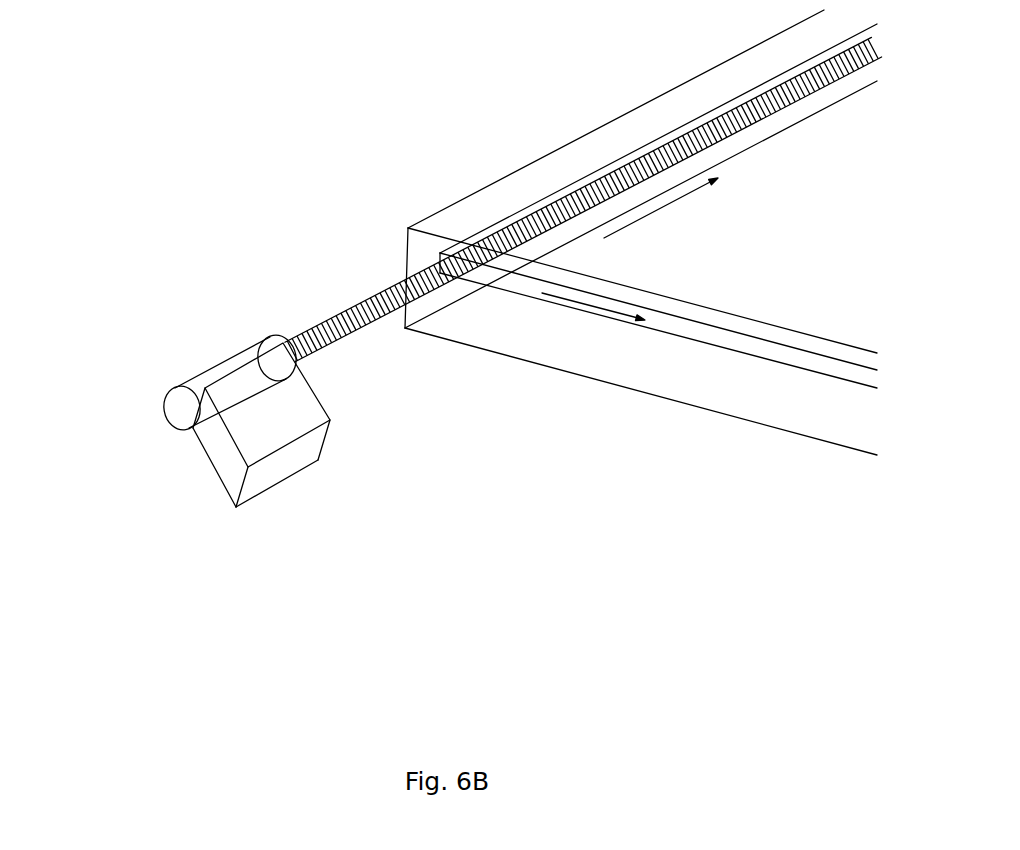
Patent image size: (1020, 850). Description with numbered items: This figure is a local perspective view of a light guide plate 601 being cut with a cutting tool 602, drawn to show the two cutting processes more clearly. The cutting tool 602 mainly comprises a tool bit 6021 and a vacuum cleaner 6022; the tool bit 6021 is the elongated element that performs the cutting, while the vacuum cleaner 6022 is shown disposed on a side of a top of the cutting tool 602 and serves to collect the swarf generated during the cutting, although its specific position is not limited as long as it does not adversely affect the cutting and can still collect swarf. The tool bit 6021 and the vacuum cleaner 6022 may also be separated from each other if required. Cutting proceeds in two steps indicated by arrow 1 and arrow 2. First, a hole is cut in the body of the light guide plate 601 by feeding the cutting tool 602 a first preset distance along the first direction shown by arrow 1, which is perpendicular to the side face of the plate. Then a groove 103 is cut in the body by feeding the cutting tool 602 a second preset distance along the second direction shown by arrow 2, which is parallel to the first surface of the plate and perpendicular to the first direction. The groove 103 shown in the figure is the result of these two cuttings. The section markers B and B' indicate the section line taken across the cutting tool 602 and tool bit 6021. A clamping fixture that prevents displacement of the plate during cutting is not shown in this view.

The light guide plate 601 is at (685, 378).
The groove 103 is at (688, 330).
The cutting tool 602 is at (238, 367).
The tool bit 6021 is at (365, 300).
The vacuum cleaner 6022 is at (282, 457).
The arrow 1 is at (661, 208).
The arrow 2 is at (593, 317).
The section line B is at (116, 386).
The section line B' is at (755, 45).